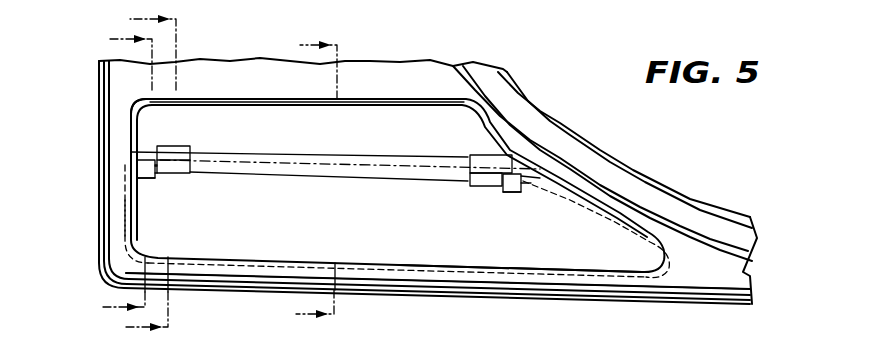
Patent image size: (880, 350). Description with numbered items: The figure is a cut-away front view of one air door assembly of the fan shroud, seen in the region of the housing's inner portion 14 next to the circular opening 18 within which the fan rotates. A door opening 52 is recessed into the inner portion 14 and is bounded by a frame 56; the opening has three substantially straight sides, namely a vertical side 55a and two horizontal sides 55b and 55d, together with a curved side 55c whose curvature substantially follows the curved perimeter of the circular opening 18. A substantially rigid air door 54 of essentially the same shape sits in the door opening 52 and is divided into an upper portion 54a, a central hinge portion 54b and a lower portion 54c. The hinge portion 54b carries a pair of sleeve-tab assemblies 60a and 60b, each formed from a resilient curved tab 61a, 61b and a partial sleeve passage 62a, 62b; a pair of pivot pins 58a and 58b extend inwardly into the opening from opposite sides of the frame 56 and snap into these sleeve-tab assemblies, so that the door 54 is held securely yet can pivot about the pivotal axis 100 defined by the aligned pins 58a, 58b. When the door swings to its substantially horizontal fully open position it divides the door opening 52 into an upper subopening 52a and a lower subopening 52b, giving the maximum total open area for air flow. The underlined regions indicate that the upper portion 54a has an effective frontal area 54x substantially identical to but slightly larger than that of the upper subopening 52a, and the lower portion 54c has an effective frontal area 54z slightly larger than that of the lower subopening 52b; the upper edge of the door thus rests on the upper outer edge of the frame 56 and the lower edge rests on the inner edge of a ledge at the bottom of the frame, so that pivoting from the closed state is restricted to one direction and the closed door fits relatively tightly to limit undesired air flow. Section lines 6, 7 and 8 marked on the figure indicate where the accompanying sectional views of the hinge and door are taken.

The section line 6- 6 is at (306, 179).
The section line 7- 7 is at (140, 173).
The section line 8- 8 is at (116, 173).
The inner portion 14 is at (395, 85).
The circular opening 18 is at (540, 100).
The door opening 52 is at (490, 255).
The upper subopening 52a is at (232, 106).
The lower subopening 52b is at (556, 268).
The air door 54 is at (283, 265).
The upper portion 54a is at (308, 143).
The central hinge portion 54b is at (313, 172).
The lower portion 54c is at (386, 246).
The effective frontal area 54x is at (398, 148).
The effective frontal area 54z is at (254, 251).
The vertical side 55a is at (122, 187).
The horizontal side 55b is at (258, 99).
The curved side 55c is at (620, 193).
The horizontal side 55d is at (368, 283).
The frame 56 is at (145, 222).
The pivot pin 58a is at (177, 157).
The pivot pin 58b is at (497, 192).
The sleeve-tab assembly 60a is at (146, 184).
The sleeve-tab assembly 60b is at (543, 190).
The curved tab 61a is at (160, 180).
The curved tab 61b is at (513, 195).
The partial sleeve passage 62a is at (190, 152).
The partial sleeve passage 62b is at (470, 186).
The pivotal axis 100 is at (257, 163).